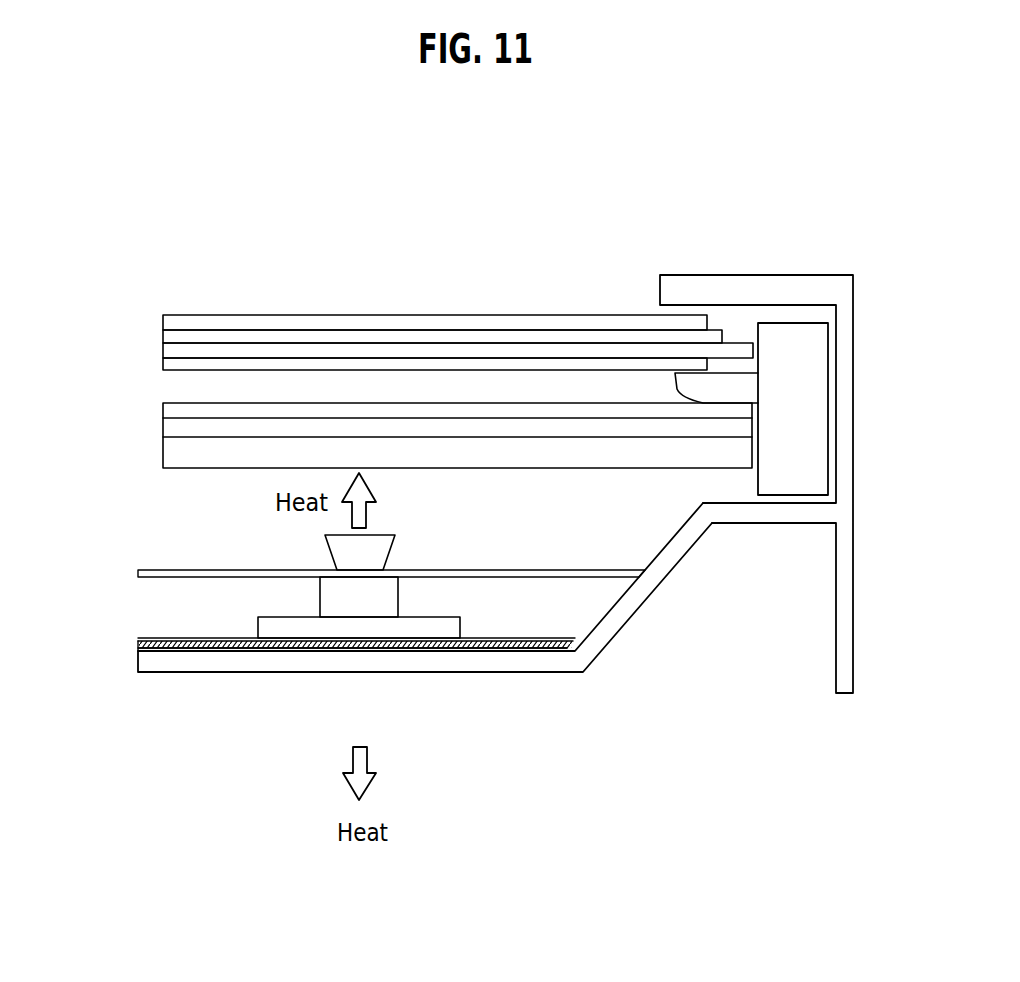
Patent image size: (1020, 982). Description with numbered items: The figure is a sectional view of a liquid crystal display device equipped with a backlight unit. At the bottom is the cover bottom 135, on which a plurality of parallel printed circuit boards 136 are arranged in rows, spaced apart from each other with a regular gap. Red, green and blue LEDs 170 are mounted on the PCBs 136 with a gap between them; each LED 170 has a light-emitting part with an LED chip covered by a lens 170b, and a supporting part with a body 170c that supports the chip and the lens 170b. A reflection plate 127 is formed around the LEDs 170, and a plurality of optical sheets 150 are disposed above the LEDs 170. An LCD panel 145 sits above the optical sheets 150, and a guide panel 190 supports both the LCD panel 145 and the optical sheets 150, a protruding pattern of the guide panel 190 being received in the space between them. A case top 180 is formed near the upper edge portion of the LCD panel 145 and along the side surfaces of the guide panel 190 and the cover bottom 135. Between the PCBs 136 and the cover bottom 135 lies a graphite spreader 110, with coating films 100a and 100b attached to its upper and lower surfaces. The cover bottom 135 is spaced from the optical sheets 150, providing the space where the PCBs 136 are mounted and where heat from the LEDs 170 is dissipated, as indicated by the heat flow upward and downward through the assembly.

The coating film 100a is at (140, 640).
The graphite spreader 110 is at (140, 645).
The coating film 100b is at (140, 650).
The reflection plate 127 is at (183, 578).
The cover bottom 135 is at (647, 587).
The printed circuit board 136 is at (365, 628).
The LCD panel 145 is at (160, 315).
The optical sheets 150 is at (160, 403).
The LED 170 is at (439, 554).
The lens 170b is at (370, 543).
The body 170c is at (383, 587).
The case top 180 is at (848, 600).
The guide panel 190 is at (812, 393).